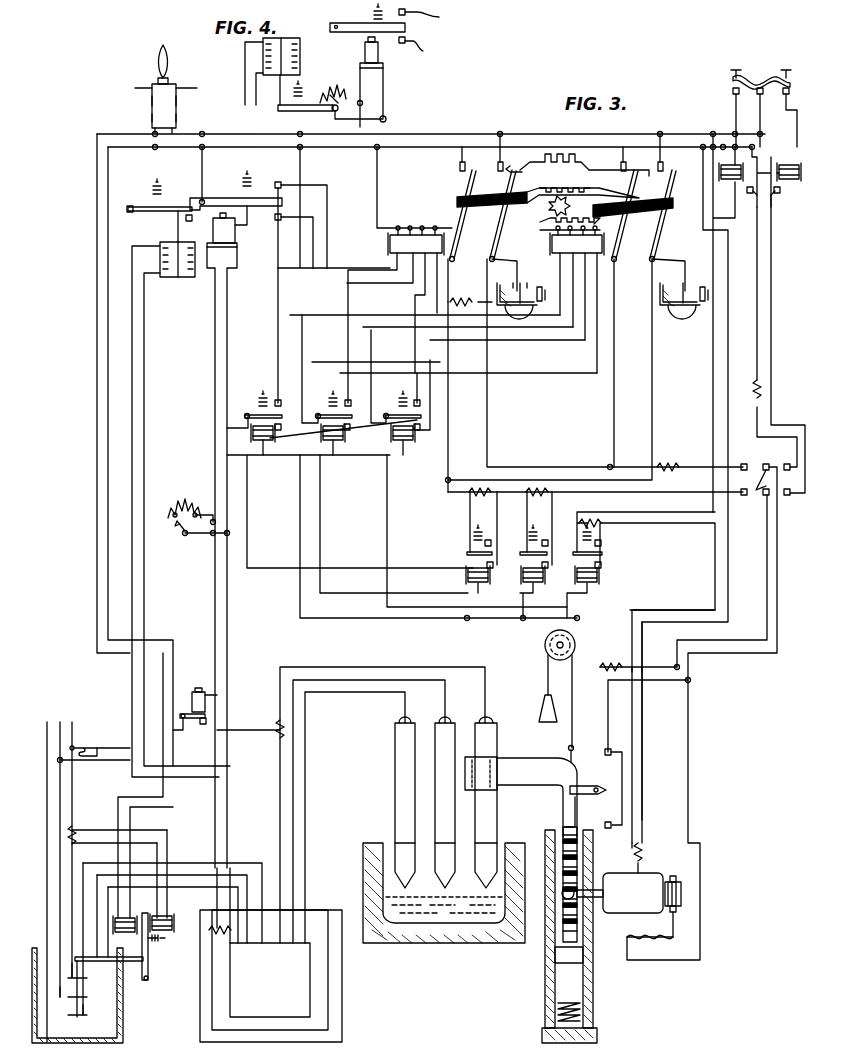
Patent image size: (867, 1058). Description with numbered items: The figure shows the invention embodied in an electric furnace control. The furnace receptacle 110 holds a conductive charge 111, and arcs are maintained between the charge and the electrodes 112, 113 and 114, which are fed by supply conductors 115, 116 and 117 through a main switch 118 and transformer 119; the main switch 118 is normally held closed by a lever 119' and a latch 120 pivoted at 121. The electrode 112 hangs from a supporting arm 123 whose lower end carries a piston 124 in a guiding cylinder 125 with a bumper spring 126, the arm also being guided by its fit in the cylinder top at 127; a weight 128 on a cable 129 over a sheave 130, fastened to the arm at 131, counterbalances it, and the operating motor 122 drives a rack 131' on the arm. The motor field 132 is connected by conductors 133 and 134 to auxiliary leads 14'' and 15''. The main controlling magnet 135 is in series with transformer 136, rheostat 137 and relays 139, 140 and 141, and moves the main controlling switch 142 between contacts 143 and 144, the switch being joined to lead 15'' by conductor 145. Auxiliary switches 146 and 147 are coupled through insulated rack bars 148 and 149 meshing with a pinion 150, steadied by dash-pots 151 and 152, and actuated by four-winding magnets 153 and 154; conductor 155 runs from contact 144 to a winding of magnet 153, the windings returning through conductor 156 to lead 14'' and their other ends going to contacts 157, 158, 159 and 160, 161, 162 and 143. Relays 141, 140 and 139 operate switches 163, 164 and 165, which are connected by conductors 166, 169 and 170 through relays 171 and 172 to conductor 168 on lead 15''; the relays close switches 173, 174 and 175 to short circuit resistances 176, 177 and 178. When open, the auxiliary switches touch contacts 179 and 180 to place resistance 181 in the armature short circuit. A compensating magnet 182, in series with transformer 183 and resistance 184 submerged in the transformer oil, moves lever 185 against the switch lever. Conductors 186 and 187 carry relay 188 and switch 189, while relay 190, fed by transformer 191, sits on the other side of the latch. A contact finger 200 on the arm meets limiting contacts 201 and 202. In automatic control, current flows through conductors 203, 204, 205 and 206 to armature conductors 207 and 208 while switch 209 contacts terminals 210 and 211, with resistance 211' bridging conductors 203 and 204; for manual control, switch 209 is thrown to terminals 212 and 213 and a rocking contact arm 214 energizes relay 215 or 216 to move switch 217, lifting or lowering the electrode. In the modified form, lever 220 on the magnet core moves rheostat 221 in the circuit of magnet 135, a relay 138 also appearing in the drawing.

In FIG. 4, the auxiliary supply lead 14'' is at (137, 89).
In FIG. 3, the auxiliary supply lead 14'' is at (431, 152).
In FIG. 4, the auxiliary supply lead 15'' is at (200, 75).
In FIG. 3, the auxiliary supply lead 15'' is at (431, 136).
In FIG. 3, the receptacle 110 is at (482, 943).
In FIG. 3, the conductive charge 111 is at (426, 905).
In FIG. 3, the electrode 112 is at (487, 822).
In FIG. 3, the electrode 113 is at (438, 808).
In FIG. 3, the electrode 114 is at (395, 795).
In FIG. 3, the supply conductor 115 is at (282, 668).
In FIG. 3, the supply conductor 116 is at (351, 680).
In FIG. 3, the supply conductor 117 is at (378, 691).
In FIG. 3, the main switch 118 is at (113, 988).
In FIG. 3, the transformer 119 is at (271, 976).
In FIG. 3, the lever 119' is at (135, 980).
In FIG. 3, the latch 120 is at (150, 946).
In FIG. 3, the pivot 121 is at (150, 976).
In FIG. 3, the operating motor 122 is at (642, 893).
In FIG. 3, the supporting arm 123 is at (543, 768).
In FIG. 3, the piston 124 is at (547, 964).
In FIG. 3, the guiding cylinder 125 is at (592, 973).
In FIG. 3, the bumper spring 126 is at (557, 1013).
In FIG. 3, the upper end of cylinder 127 is at (560, 824).
In FIG. 3, the weight 128 is at (542, 710).
In FIG. 3, the cable 129 is at (572, 674).
In FIG. 3, the sheave 130 is at (545, 648).
In FIG. 3, the cable fastening 131 is at (586, 738).
In FIG. 3, the rack 131' is at (594, 884).
In FIG. 3, the field 132 is at (642, 844).
In FIG. 3, the conductor 133 is at (717, 548).
In FIG. 3, the conductor 134 is at (728, 602).
In FIG. 4, the main controlling magnet 135 is at (362, 37).
In FIG. 3, the main controlling magnet 135 is at (235, 228).
In FIG. 3, the transformer 136 is at (278, 722).
In FIG. 3, the rheostat 137 is at (196, 478).
In FIG. 3, the relay 138 is at (198, 690).
In FIG. 3, the relay 139 is at (403, 443).
In FIG. 3, the relay 140 is at (333, 448).
In FIG. 3, the relay 141 is at (264, 446).
In FIG. 4, the main controlling switch 142 is at (358, 31).
In FIG. 3, the main controlling switch 142 is at (227, 196).
In FIG. 4, the contact 143 is at (423, 51).
In FIG. 3, the contact 143 is at (280, 230).
In FIG. 4, the contact 144 is at (436, 18).
In FIG. 3, the contact 144 is at (278, 182).
In FIG. 3, the conductor 145 is at (197, 160).
In FIG. 3, the auxiliary switch 146 is at (462, 180).
In FIG. 3, the auxiliary switch 147 is at (660, 216).
In FIG. 3, the insulated rack bar 148 is at (598, 186).
In FIG. 3, the insulated rack bar 149 is at (544, 230).
In FIG. 3, the pinion 150 is at (550, 204).
In FIG. 3, the dash-pot 151 is at (515, 284).
In FIG. 3, the dash-pot 152 is at (680, 290).
In FIG. 3, the magnet 153 is at (399, 275).
In FIG. 3, the magnet 154 is at (577, 299).
In FIG. 3, the conductor 155 is at (326, 188).
In FIG. 3, the conductor 156 is at (492, 232).
In FIG. 3, the contact 157 is at (276, 400).
In FIG. 3, the contact 158 is at (347, 400).
In FIG. 3, the contact 159 is at (416, 400).
In FIG. 3, the contact 160 is at (343, 439).
In FIG. 3, the contact 161 is at (361, 441).
In FIG. 3, the contact 162 is at (432, 406).
In FIG. 3, the switch 163 is at (247, 414).
In FIG. 3, the switch 164 is at (314, 414).
In FIG. 3, the switch 165 is at (384, 414).
In FIG. 3, the conductor 166 is at (274, 506).
In FIG. 3, the conductor 168 is at (460, 620).
In FIG. 3, the conductor 169 is at (341, 506).
In FIG. 3, the conductor 170 is at (392, 500).
In FIG. 3, the relay 171 is at (530, 590).
In FIG. 3, the relay 172 is at (593, 577).
In FIG. 3, the switch 173 is at (467, 552).
In FIG. 3, the switch 174 is at (520, 552).
In FIG. 3, the switch 175 is at (573, 552).
In FIG. 3, the resistance 176 is at (595, 526).
In FIG. 3, the resistance 177 is at (537, 526).
In FIG. 3, the resistance 178 is at (600, 509).
In FIG. 3, the contact 179 is at (514, 172).
In FIG. 3, the contact 180 is at (672, 170).
In FIG. 3, the resistance 181 is at (564, 162).
In FIG. 4, the compensating magnet 182 is at (308, 36).
In FIG. 3, the compensating magnet 182 is at (174, 280).
In FIG. 3, the transformer 183 is at (75, 760).
In FIG. 3, the resistance 184 is at (172, 905).
In FIG. 3, the lever 185 is at (132, 218).
In FIG. 3, the conductor 186 is at (97, 398).
In FIG. 3, the conductor 187 is at (108, 456).
In FIG. 3, the relay 188 is at (118, 923).
In FIG. 3, the switch 189 is at (197, 724).
In FIG. 3, the relay 190 is at (172, 924).
In FIG. 3, the transformer 191 is at (70, 822).
In FIG. 3, the contact finger 200 is at (594, 800).
In FIG. 3, the limiting contact 201 is at (611, 832).
In FIG. 3, the limiting contact 202 is at (608, 752).
In FIG. 3, the conductor 203 is at (446, 440).
In FIG. 3, the conductor 204 is at (490, 415).
In FIG. 3, the conductor 205 is at (608, 438).
In FIG. 3, the conductor 206 is at (652, 452).
In FIG. 3, the conductor 207 is at (768, 608).
In FIG. 3, the conductor 208 is at (786, 586).
In FIG. 3, the switch 209 is at (766, 464).
In FIG. 3, the terminal 210 is at (745, 494).
In FIG. 3, the terminal 211 is at (747, 445).
In FIG. 3, the resistance 211' is at (470, 282).
In FIG. 3, the terminal 212 is at (788, 464).
In FIG. 3, the terminal 213 is at (790, 486).
In FIG. 3, the contact arm 214 is at (757, 76).
In FIG. 3, the relay 215 is at (732, 182).
In FIG. 3, the relay 216 is at (787, 182).
In FIG. 3, the switch 217 is at (771, 190).
In FIG. 4, the lever 220 is at (332, 110).
In FIG. 4, the rheostat 221 is at (320, 88).